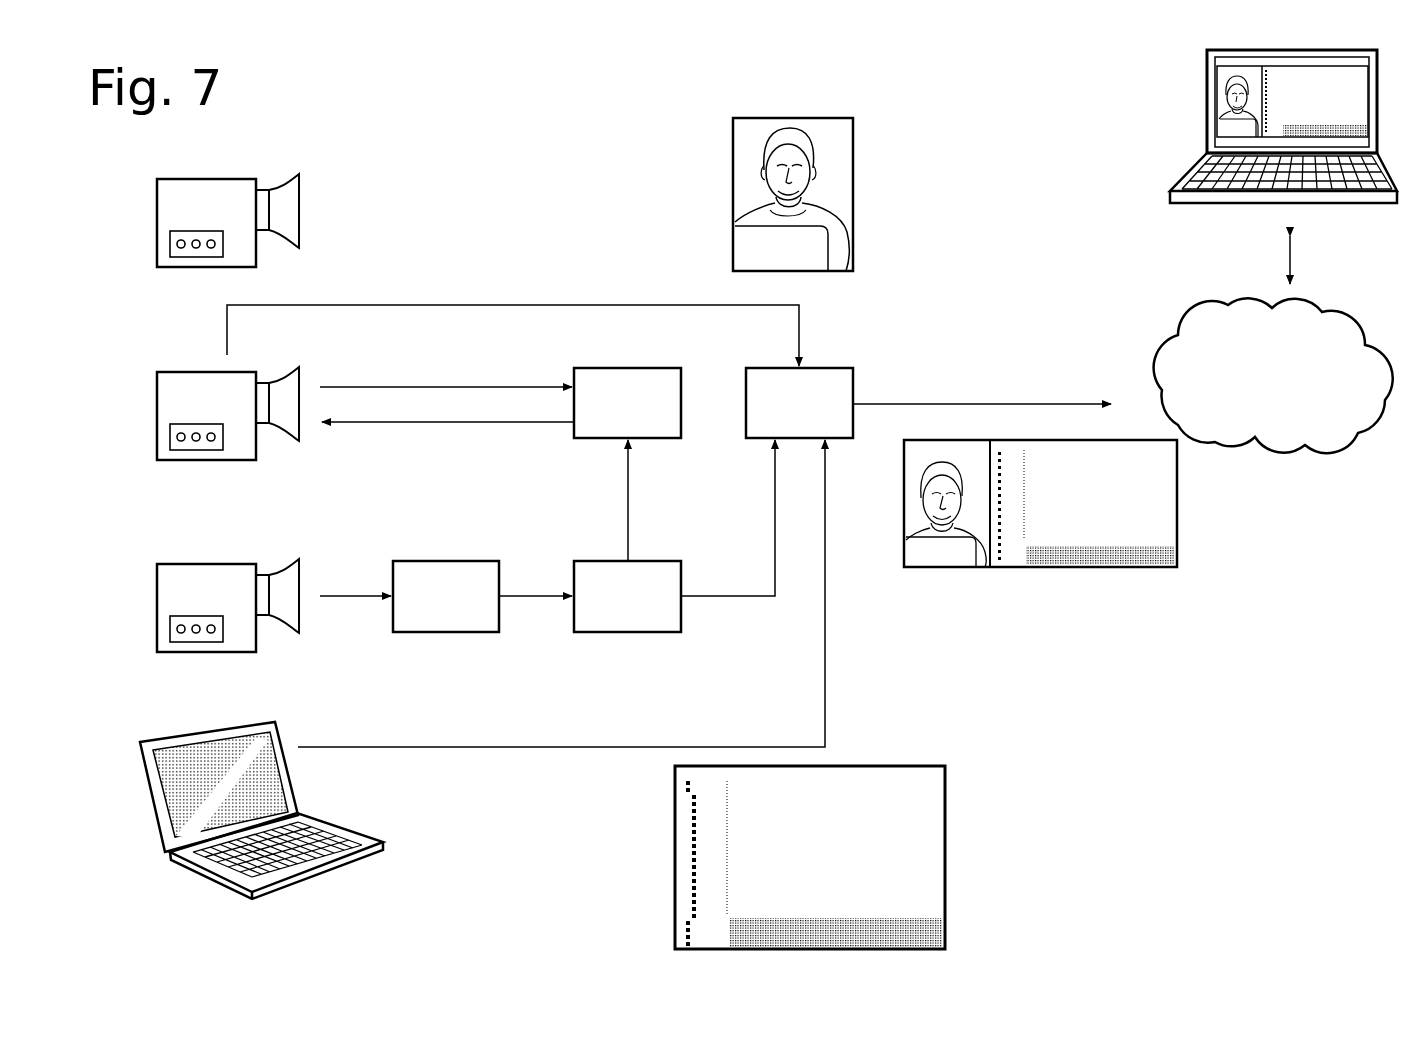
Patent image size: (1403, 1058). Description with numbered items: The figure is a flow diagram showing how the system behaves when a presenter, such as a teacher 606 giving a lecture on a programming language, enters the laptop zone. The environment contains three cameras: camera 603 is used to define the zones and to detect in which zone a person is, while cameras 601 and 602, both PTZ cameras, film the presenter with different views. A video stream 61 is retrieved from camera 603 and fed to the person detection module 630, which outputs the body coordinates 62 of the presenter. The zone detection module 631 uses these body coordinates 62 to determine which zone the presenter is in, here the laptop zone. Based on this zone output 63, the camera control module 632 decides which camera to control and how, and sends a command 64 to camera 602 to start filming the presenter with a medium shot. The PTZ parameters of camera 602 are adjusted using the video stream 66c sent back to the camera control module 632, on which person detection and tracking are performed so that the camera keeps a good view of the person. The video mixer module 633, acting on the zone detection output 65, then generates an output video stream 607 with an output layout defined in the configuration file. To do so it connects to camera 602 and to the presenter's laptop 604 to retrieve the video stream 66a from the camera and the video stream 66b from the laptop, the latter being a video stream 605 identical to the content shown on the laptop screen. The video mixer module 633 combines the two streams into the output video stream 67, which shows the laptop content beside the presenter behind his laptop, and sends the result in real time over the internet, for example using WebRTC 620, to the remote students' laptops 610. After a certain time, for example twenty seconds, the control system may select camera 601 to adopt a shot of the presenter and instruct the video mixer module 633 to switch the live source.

The camera 601 is at (181, 199).
The camera 602 is at (181, 393).
The camera 603 is at (180, 585).
The laptop 604 is at (160, 743).
The video stream comprising the content of the laptop 605 is at (895, 853).
The teacher 606 is at (750, 158).
The output video stream 607 is at (1103, 537).
The laptops of remote users 610 is at (1222, 86).
The WebRTC 620 is at (1273, 433).
The person detection module 630 is at (458, 572).
The zone detection module 631 is at (652, 572).
The camera control module 632 is at (648, 378).
The video mixer module 633 is at (822, 378).
The video stream 61 is at (357, 595).
The body coordinates 62 is at (530, 598).
The output of the zone detection module 63 is at (627, 496).
The command 64 is at (470, 422).
The output of the zone detection module 65 is at (742, 598).
The video stream 66a is at (482, 305).
The video stream 66b is at (462, 747).
The video stream 66c is at (432, 387).
The output video stream 67 is at (970, 405).